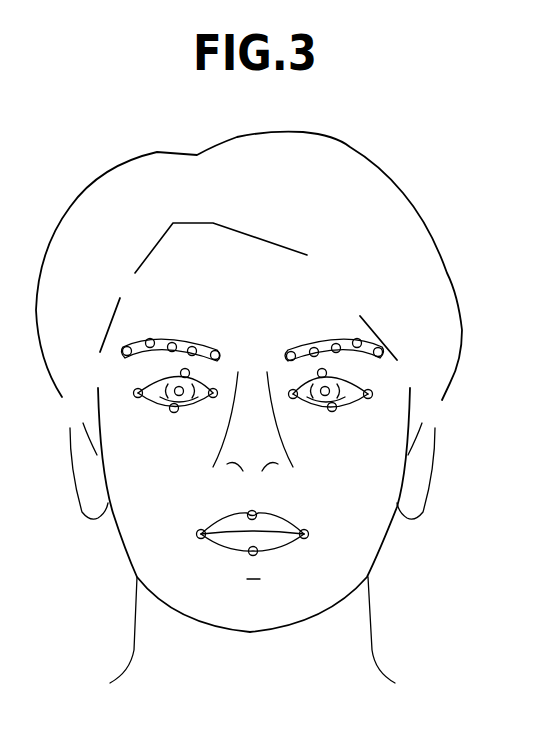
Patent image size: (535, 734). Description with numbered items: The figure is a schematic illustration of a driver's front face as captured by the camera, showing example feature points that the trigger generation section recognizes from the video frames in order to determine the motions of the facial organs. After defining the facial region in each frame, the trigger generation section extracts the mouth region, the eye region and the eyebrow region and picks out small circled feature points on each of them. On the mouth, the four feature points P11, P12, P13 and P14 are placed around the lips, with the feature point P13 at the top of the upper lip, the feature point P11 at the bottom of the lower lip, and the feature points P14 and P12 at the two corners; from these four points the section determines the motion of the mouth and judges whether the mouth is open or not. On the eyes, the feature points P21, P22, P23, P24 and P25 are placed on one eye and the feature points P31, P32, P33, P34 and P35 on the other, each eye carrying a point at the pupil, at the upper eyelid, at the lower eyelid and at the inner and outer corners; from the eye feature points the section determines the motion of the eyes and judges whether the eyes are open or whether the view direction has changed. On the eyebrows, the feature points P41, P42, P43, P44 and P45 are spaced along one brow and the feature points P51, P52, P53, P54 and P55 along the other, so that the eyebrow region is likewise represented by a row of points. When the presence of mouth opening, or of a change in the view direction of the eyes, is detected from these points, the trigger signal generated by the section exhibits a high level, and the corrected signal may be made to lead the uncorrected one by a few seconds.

The feature point P11 is at (250, 556).
The feature point P12 is at (308, 538).
The feature point P13 is at (254, 510).
The feature point P14 is at (197, 534).
The feature point P21 is at (343, 396).
The feature point P22 is at (335, 412).
The feature point P23 is at (372, 397).
The feature point P24 is at (327, 370).
The feature point P25 is at (295, 399).
The feature point P31 is at (162, 398).
The feature point P32 is at (173, 413).
The left eye outer corner feature point P33 is at (134, 396).
The feature point P34 is at (181, 373).
The feature point P35 is at (211, 398).
The feature point P41 is at (290, 351).
The feature point P42 is at (314, 347).
The feature point P43 is at (337, 343).
The feature point P44 is at (361, 340).
The feature point P45 is at (383, 350).
The feature point P51 is at (216, 350).
The feature point P52 is at (191, 346).
The left eyebrow middle feature point P53 is at (170, 342).
The feature point P54 is at (146, 340).
The feature point P55 is at (123, 348).